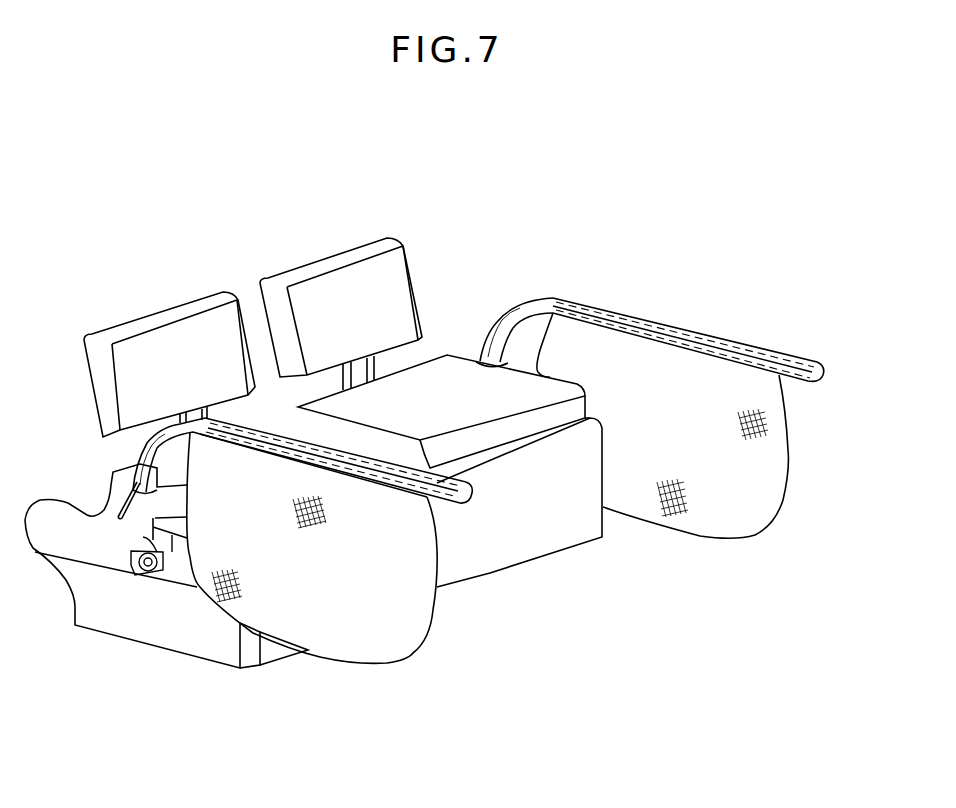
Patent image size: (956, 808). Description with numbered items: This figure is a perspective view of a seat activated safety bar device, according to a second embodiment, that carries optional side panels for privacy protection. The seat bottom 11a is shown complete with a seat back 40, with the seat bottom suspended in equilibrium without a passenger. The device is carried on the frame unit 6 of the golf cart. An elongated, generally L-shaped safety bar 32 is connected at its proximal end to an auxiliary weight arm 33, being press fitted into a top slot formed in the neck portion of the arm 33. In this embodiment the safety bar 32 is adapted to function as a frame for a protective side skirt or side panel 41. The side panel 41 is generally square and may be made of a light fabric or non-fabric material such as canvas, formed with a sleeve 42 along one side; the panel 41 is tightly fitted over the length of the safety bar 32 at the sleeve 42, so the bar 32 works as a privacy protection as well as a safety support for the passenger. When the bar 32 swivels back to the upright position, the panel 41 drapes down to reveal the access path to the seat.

The frame unit 6 is at (183, 632).
The seat bottom 11a is at (472, 403).
The safety bar 32 is at (468, 502).
The auxiliary weight arm 33 is at (120, 527).
The seat back 40 is at (170, 317).
The side panel 41 is at (398, 622).
The sleeve 42 is at (392, 482).